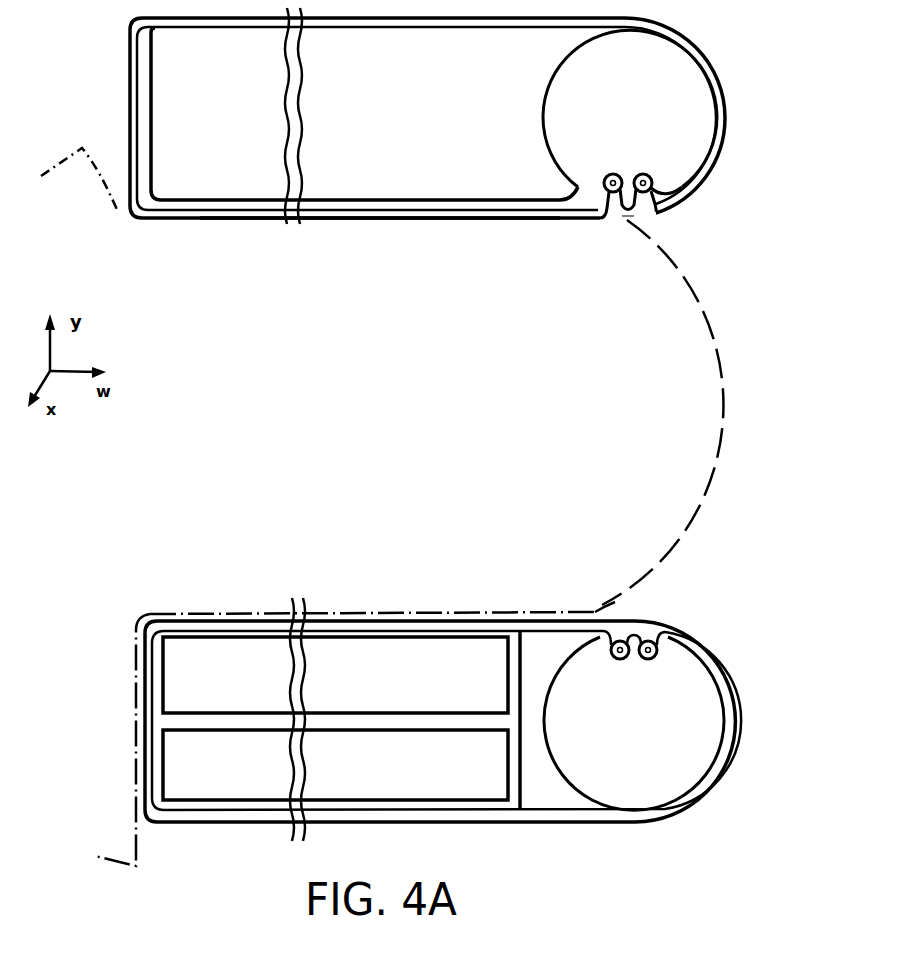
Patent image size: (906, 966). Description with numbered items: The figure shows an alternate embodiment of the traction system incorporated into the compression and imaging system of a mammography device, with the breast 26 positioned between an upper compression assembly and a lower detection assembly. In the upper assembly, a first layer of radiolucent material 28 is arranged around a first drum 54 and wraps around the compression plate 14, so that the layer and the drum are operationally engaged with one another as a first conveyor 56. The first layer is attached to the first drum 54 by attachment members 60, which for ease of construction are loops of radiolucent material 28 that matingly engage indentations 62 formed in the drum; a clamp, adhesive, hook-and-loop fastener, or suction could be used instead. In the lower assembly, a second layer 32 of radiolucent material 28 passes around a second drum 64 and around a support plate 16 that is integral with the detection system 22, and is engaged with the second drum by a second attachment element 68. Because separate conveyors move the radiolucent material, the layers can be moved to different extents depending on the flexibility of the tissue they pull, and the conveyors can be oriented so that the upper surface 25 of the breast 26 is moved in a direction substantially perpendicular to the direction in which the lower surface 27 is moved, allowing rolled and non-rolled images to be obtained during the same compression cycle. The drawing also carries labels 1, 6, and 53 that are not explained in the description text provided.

The mammography apparatus 1 is at (756, 697).
The bucky assembly 6 is at (742, 791).
The compression plate 14 is at (150, 96).
The support plate 16 is at (437, 615).
The detection system 22 is at (543, 638).
The upper surface 25 is at (397, 223).
The breast 26 is at (478, 393).
The lower surface 27 is at (380, 612).
The radiolucent material 28 is at (97, 48).
The second layer 32 is at (553, 824).
The notch 53 is at (621, 235).
The first drum 54 is at (645, 100).
The first conveyor 56 is at (750, 126).
The attachment members 60 is at (605, 181).
The indentations 62 is at (628, 171).
The second drum 64 is at (618, 750).
The second attachment element 68 is at (613, 598).